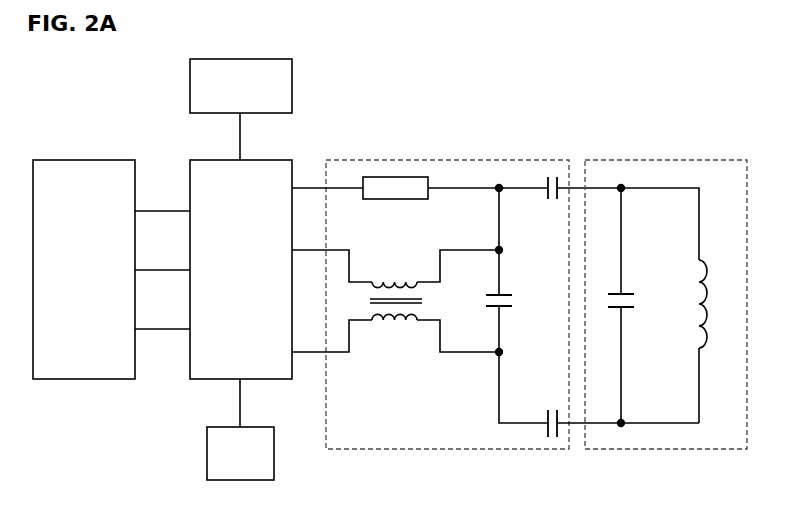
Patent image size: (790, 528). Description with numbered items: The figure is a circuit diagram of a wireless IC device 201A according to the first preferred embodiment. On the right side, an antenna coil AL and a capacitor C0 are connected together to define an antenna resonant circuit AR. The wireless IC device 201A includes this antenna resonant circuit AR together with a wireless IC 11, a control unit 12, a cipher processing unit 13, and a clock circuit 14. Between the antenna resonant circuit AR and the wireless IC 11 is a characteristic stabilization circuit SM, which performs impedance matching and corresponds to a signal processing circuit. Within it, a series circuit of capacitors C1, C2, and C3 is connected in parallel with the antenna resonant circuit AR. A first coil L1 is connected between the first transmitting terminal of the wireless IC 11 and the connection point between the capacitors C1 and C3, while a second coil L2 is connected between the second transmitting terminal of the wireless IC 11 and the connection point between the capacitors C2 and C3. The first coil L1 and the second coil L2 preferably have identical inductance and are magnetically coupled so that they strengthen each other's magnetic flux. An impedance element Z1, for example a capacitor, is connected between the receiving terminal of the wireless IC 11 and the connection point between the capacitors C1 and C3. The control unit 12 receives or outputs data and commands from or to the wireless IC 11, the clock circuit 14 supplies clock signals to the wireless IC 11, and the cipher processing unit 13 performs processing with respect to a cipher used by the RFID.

The wireless IC device 201A is at (680, 58).
The wireless IC 11 is at (292, 160).
The control unit 12 is at (83, 160).
The cipher processing unit 13 is at (240, 58).
The clock circuit 14 is at (274, 480).
The characteristic stabilization circuit SM is at (462, 160).
The antenna resonant circuit AR is at (719, 160).
The impedance element Z1 is at (398, 177).
The first coil L1 is at (394, 271).
The second coil L2 is at (394, 331).
The capacitor C1 is at (551, 203).
The capacitor C2 is at (552, 412).
The capacitor C3 is at (513, 302).
The capacitor C0 is at (634, 301).
The antenna coil AL is at (716, 304).